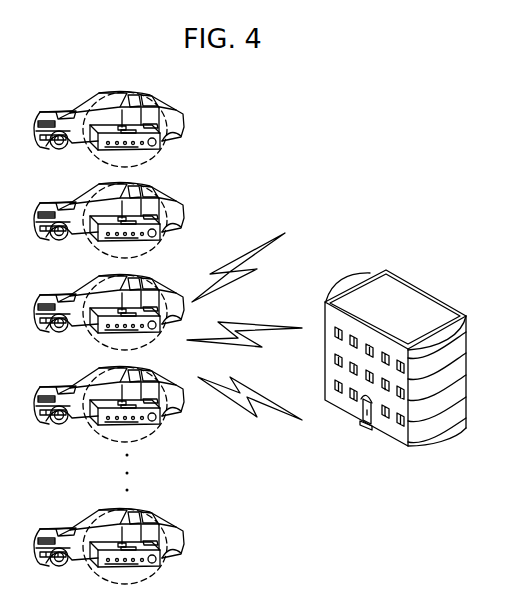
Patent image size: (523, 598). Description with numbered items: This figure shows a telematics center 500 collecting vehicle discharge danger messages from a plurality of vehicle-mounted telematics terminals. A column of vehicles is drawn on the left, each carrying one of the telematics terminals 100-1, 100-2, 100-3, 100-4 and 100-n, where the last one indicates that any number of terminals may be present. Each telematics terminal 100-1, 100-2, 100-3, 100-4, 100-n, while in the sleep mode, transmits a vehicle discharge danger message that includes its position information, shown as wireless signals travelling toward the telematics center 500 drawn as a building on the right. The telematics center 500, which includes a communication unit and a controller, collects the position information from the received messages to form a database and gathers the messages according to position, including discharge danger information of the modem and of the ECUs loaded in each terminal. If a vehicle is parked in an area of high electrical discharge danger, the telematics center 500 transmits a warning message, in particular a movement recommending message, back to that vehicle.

The telematics terminal 100-1 is at (107, 114).
The telematics terminal 100-2 is at (107, 205).
The telematics terminal 100-3 is at (107, 297).
The telematics terminal 100-4 is at (107, 389).
The telematics terminal 100-n is at (107, 531).
The telematics center 500 is at (324, 296).